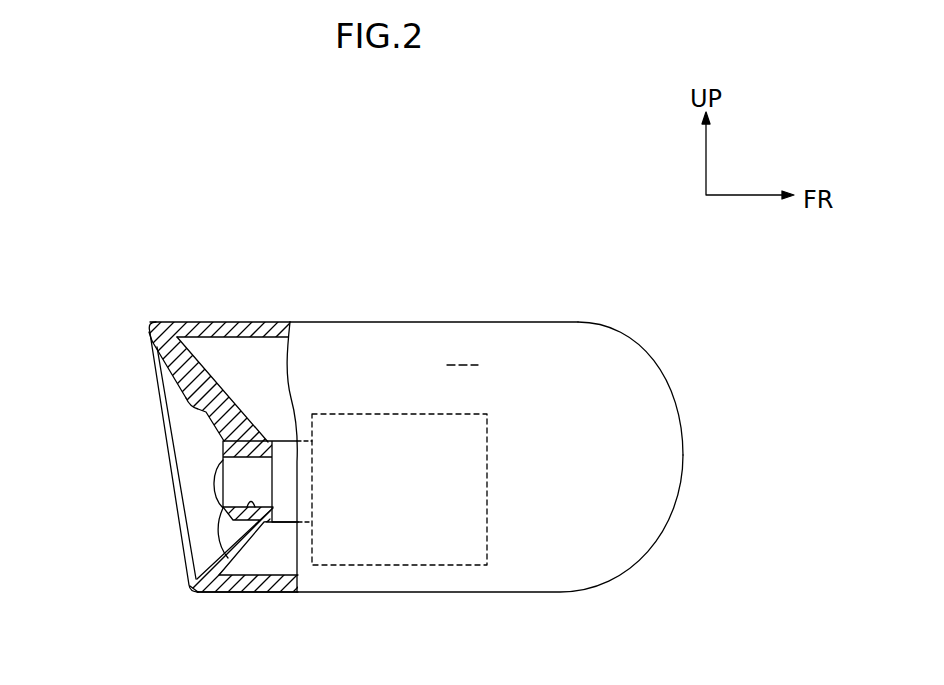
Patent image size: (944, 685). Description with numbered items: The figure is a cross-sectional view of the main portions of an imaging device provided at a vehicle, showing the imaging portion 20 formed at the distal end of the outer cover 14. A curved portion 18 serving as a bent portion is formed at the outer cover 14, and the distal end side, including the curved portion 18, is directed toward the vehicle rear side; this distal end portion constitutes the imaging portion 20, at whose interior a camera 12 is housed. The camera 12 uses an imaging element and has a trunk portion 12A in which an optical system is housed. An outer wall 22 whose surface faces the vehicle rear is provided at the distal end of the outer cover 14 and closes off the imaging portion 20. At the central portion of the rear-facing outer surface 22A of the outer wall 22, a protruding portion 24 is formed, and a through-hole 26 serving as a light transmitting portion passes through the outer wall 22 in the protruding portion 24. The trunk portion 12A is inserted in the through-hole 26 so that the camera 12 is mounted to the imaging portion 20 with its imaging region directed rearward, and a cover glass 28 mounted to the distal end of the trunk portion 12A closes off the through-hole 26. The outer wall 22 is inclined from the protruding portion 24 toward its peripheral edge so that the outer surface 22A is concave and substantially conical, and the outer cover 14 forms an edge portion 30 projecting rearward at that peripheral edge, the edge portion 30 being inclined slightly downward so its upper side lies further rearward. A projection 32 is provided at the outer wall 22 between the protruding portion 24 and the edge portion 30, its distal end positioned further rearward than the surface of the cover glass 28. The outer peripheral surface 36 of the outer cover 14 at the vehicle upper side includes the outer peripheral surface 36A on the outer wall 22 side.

The camera 12 is at (489, 468).
The trunk portion 12A is at (246, 465).
The outer cover 14 is at (657, 313).
The curved portion 18 is at (586, 320).
The imaging portion 20 is at (462, 352).
The outer wall 22 is at (199, 450).
The outer surface 22A is at (172, 380).
The protruding portion 24 is at (233, 590).
The through-hole 26 is at (268, 582).
The cover glass 28 is at (215, 482).
The edge portion 30 is at (148, 326).
The projection 32 is at (186, 404).
The outer peripheral surface 36 is at (427, 320).
The outer peripheral surface 36A is at (400, 418).